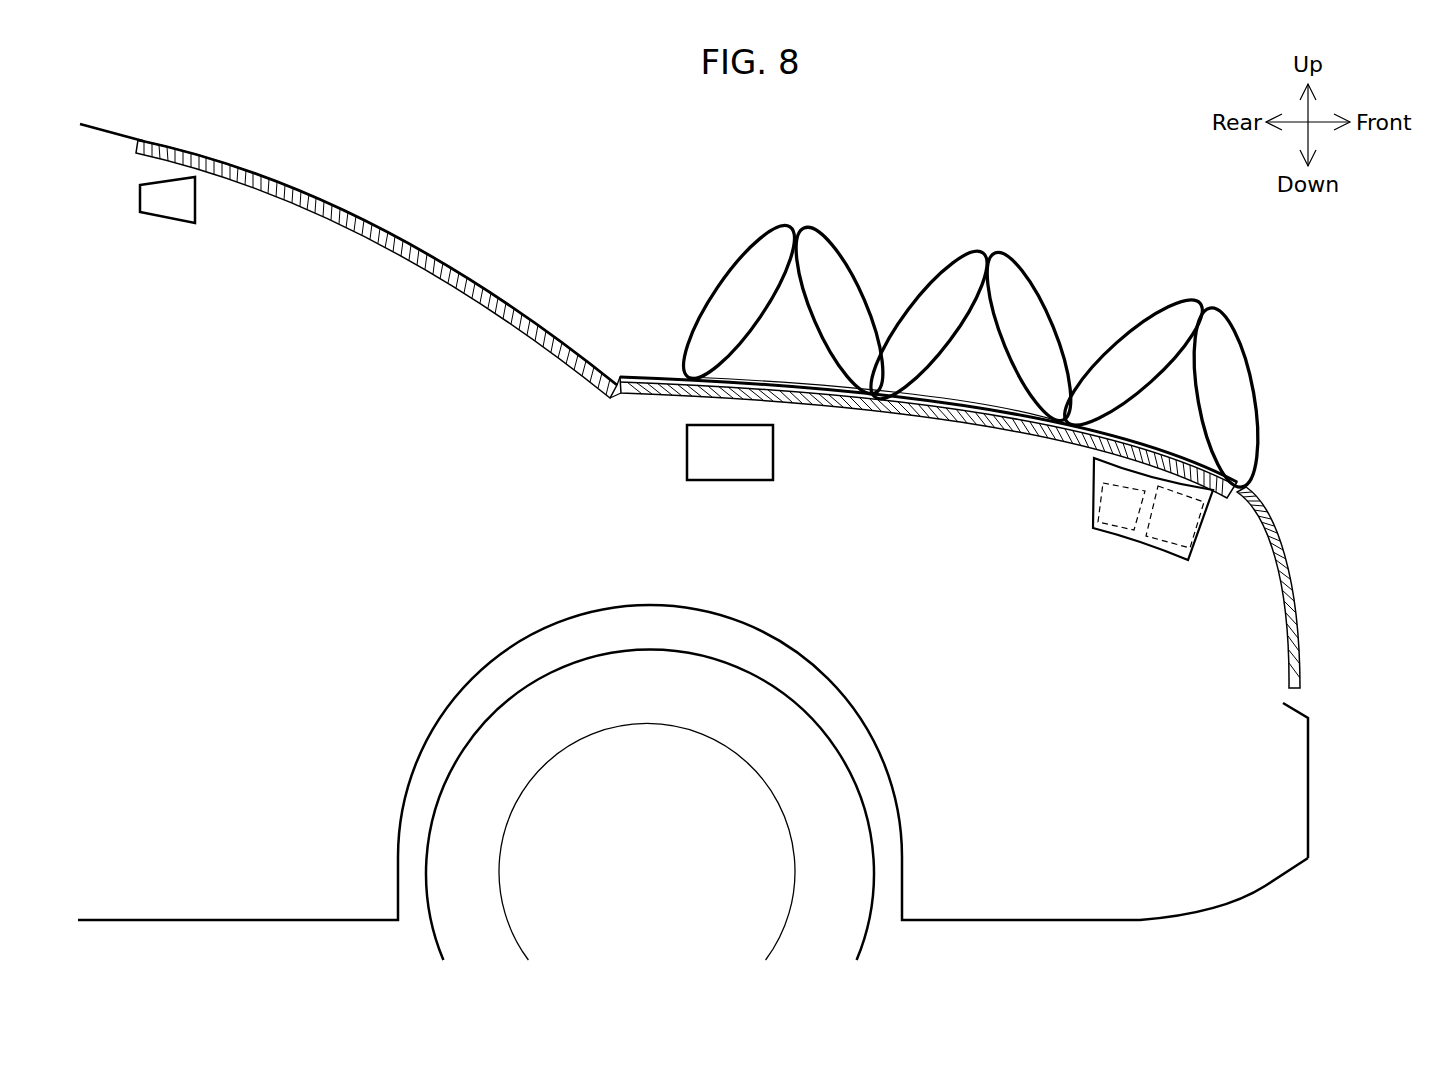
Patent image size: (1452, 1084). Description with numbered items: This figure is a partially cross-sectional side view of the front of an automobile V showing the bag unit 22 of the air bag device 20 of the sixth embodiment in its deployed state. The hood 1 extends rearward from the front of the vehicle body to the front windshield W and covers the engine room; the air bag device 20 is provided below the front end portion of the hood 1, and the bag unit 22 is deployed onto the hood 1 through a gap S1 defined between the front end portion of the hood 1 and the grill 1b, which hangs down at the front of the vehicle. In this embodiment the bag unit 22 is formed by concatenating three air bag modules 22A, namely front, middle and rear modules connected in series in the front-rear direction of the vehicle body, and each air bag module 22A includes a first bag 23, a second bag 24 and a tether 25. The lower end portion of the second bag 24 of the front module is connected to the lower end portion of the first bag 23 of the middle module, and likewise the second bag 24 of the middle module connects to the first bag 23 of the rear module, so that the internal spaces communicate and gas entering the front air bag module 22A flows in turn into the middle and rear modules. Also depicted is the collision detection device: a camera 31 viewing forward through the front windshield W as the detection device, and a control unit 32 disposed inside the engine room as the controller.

The hood 1 is at (928, 430).
The grill 1b is at (1297, 596).
The air bag device 20 is at (1136, 545).
The bag unit 22 is at (1309, 317).
The air bag module 22A is at (790, 205).
The first bag 23 is at (848, 250).
The second bag 24 is at (728, 271).
The tether 25 is at (793, 383).
The camera 31 is at (163, 225).
The control unit 32 is at (730, 482).
The gap S1 is at (1254, 485).
The automobile V is at (614, 200).
The front windshield W is at (394, 232).